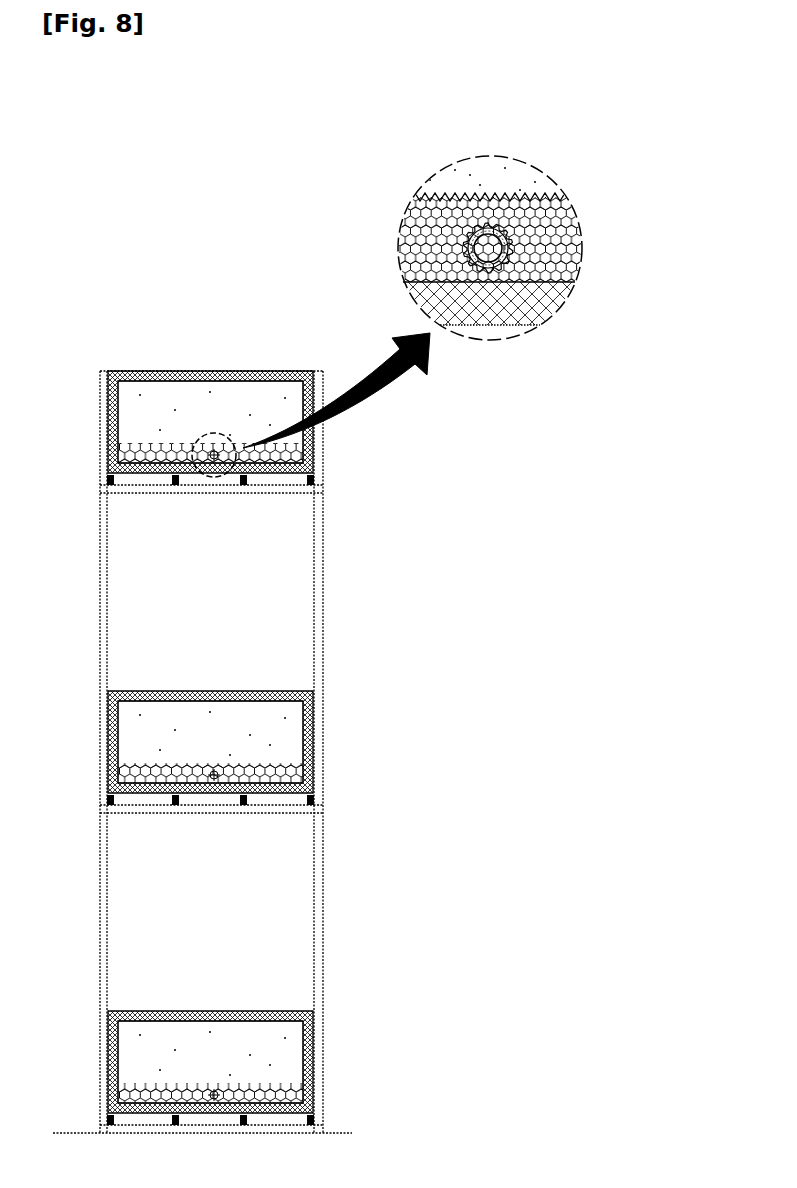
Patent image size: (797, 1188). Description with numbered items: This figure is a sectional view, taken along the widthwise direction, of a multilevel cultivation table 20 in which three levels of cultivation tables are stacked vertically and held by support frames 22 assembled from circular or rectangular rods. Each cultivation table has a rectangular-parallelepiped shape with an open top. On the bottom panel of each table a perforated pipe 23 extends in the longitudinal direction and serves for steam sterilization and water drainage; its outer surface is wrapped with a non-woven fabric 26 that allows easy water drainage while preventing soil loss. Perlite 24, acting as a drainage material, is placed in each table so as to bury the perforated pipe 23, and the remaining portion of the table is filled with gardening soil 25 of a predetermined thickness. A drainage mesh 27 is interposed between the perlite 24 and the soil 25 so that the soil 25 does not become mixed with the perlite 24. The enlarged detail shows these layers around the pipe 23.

The battery module frame 20 is at (323, 525).
The support frame 22 is at (322, 610).
The perforated pipe 23 is at (214, 450).
The perlite 24 is at (134, 456).
The soil 25 is at (135, 403).
The non-woven fabric 26 is at (128, 480).
The drainage mesh 27 is at (514, 186).